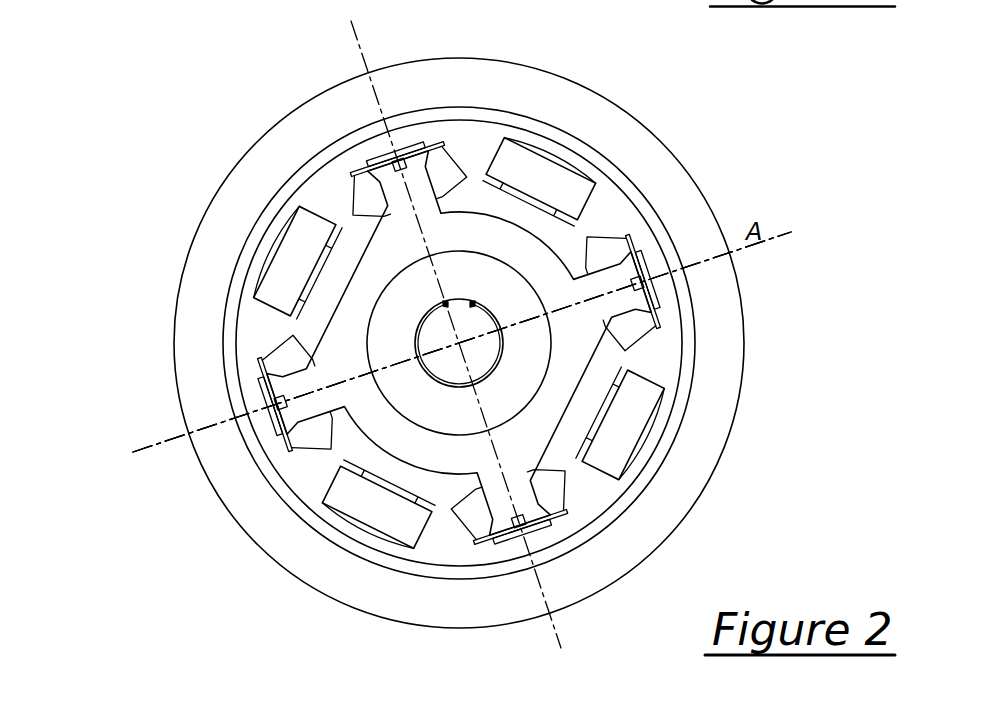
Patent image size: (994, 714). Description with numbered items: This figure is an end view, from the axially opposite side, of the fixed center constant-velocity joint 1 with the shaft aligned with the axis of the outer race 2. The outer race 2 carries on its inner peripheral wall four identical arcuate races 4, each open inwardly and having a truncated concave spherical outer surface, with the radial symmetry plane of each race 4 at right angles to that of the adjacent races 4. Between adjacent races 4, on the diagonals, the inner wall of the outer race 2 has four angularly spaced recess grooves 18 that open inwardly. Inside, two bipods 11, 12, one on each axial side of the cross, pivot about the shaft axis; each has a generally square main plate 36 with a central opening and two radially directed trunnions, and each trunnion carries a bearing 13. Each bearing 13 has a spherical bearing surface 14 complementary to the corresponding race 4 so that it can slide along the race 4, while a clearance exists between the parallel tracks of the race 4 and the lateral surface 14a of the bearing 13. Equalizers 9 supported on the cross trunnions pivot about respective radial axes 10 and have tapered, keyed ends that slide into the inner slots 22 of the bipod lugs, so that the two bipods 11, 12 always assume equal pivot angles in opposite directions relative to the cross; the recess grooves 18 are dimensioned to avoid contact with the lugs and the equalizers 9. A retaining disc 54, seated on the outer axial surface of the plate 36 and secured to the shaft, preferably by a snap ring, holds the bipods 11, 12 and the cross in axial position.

The fixed center constant-velocity joint 1 is at (172, 505).
The outer race 2 is at (648, 167).
The arcuate race 4 is at (470, 148).
The equalizer 9 is at (645, 232).
The radial axis 10 is at (352, 50).
The bipod 11 is at (290, 303).
The bipod 12 is at (462, 342).
The bearing 13 is at (525, 140).
The spherical bearing surface 14 is at (560, 163).
The lateral surface of the bearing 14a is at (585, 202).
The recess groove 18 is at (672, 305).
The slot 22 is at (516, 7).
The main plate 36 is at (416, 256).
The retaining disc 54 is at (536, 381).